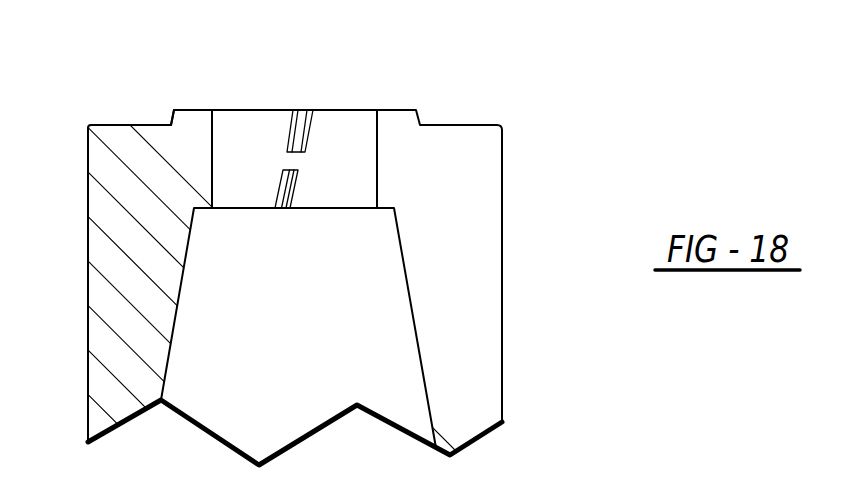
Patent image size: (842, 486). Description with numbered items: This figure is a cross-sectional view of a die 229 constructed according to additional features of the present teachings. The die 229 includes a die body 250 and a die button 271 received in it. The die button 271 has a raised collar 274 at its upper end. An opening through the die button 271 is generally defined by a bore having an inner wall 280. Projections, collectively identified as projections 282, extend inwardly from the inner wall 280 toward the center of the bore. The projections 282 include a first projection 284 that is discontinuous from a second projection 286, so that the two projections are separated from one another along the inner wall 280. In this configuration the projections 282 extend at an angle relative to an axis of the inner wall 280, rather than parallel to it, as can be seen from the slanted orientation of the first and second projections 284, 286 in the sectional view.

The die button 271 is at (310, 243).
The die 229 is at (127, 230).
The die body 250 is at (478, 280).
The raised collar 274 is at (190, 108).
The inner wall 280 is at (214, 147).
The projections 282 is at (337, 128).
The second projection 286 is at (303, 128).
The first projection 284 is at (297, 188).